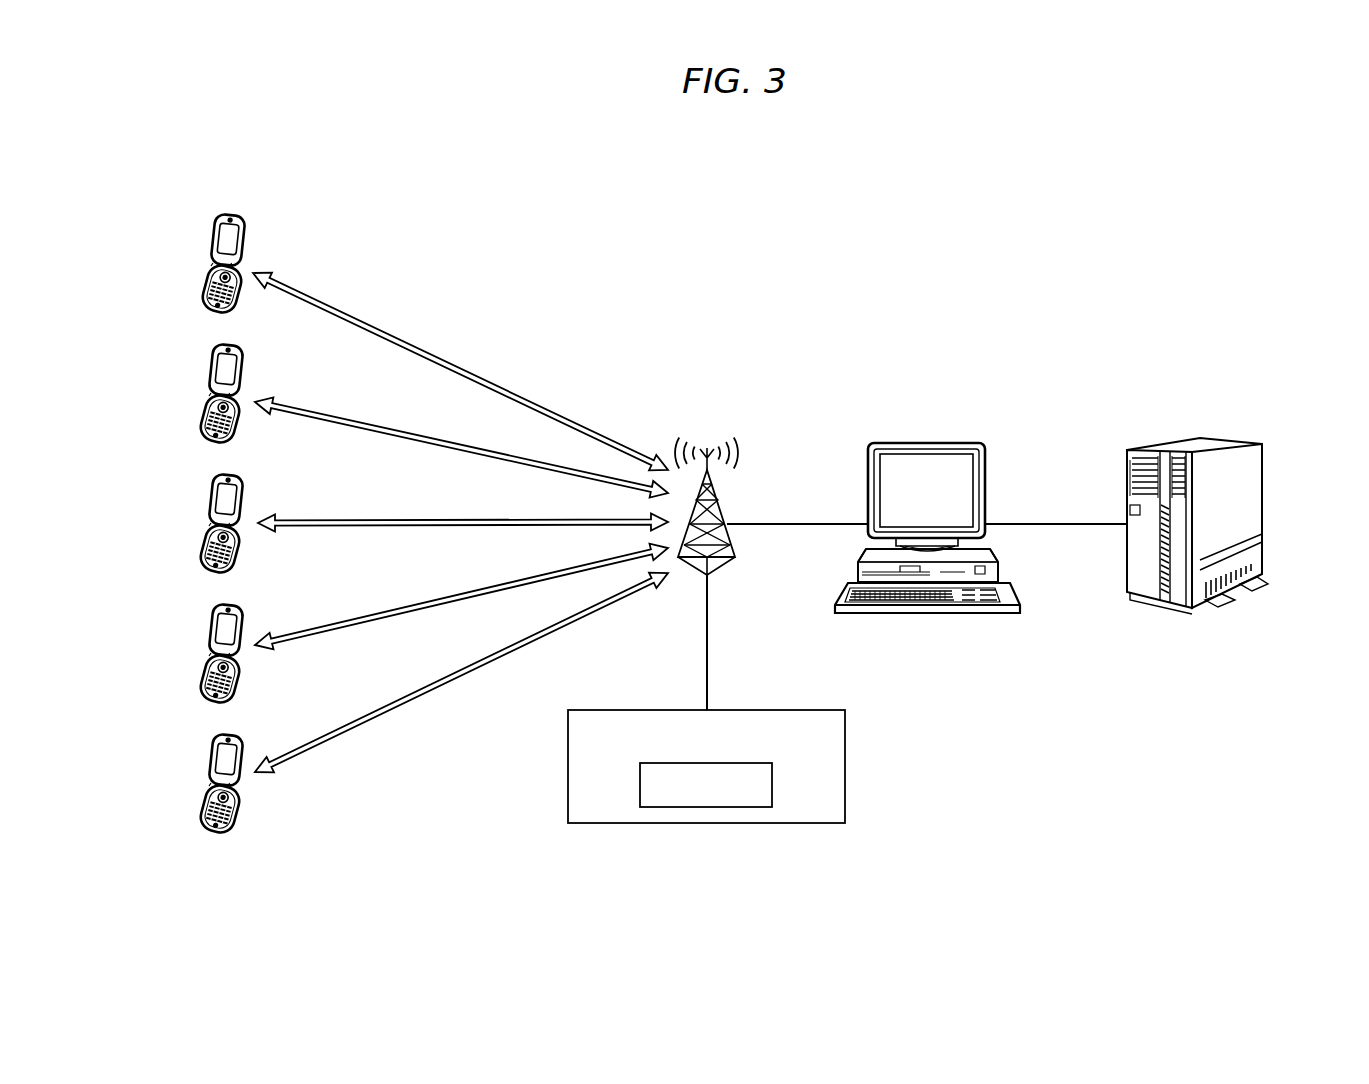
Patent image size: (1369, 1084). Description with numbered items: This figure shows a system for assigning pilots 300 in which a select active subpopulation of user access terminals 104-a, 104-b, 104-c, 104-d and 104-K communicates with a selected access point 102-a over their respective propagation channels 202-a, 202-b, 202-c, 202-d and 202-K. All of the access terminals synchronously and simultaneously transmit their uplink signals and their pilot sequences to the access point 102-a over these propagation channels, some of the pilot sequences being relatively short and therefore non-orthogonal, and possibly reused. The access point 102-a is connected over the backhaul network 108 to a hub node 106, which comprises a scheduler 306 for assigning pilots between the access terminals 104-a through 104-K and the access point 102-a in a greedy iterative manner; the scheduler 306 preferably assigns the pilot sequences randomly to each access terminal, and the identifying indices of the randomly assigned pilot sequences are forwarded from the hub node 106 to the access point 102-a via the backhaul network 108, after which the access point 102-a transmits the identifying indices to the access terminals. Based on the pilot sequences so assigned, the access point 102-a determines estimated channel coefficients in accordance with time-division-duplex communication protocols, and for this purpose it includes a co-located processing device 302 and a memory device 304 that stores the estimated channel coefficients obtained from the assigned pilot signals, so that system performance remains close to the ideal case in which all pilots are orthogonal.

The system for assigning pilots 300 is at (463, 158).
The access terminal 104-a is at (205, 312).
The access terminal 104-b is at (205, 440).
The access terminal 104-c is at (205, 572).
The access terminal 104-d is at (205, 700).
The access terminal 104-K is at (205, 830).
The propagation channel 202-a is at (390, 332).
The propagation channel 202-b is at (390, 424).
The propagation channel 202-c is at (391, 517).
The propagation channel 202-d is at (389, 622).
The propagation channel 202-K is at (389, 715).
The access point 102-a is at (728, 502).
The backhaul network 108 is at (710, 644).
The hub node 106 is at (848, 714).
The scheduler 306 is at (774, 768).
The processing device 302 is at (958, 444).
The memory device 304 is at (1263, 444).